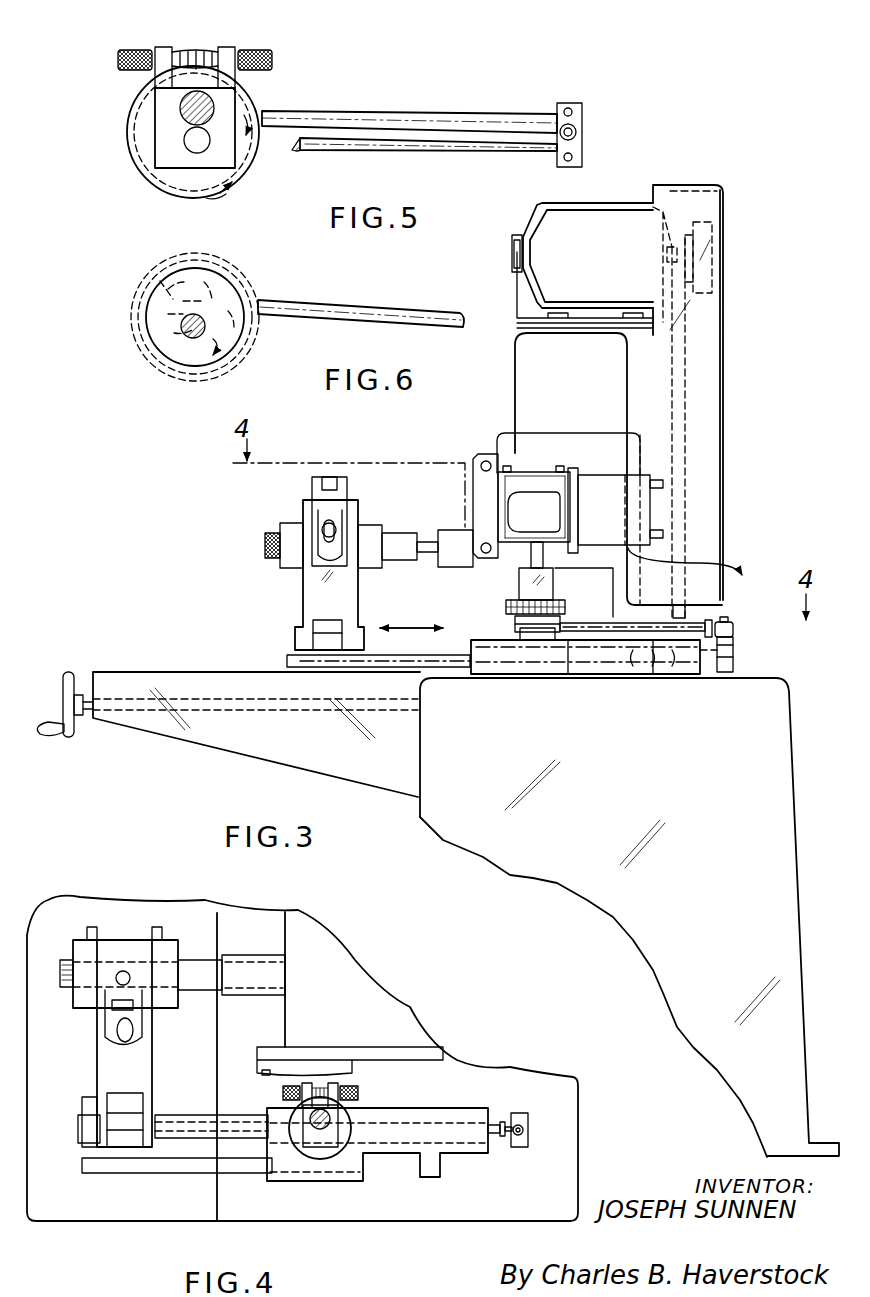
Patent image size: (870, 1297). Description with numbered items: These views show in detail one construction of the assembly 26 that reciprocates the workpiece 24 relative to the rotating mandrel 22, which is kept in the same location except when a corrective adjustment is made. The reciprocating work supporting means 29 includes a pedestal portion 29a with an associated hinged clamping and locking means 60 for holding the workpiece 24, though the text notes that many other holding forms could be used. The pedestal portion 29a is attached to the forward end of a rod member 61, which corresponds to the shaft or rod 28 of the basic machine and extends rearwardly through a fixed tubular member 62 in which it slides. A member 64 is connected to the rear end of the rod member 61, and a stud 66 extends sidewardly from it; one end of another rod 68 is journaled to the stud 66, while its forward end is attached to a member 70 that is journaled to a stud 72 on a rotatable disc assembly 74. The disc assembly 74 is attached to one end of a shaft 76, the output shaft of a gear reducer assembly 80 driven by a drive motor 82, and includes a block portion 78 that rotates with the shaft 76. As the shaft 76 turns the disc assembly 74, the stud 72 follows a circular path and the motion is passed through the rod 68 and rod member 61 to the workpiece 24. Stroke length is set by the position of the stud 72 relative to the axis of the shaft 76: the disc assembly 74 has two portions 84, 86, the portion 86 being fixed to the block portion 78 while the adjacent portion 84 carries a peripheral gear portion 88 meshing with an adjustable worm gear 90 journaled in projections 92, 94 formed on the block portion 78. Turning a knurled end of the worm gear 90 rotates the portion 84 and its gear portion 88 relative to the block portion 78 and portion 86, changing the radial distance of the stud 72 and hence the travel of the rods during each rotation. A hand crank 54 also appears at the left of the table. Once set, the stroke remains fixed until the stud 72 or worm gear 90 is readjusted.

In FIG. 3, the rotating mandrel 22 is at (262, 552).
In FIG. 3, the workpiece 24 is at (372, 535).
In FIG. 4, the workpiece 24 is at (175, 995).
In FIG. 3, the assembly 26 is at (262, 578).
In FIG. 4, the shaft or rod 28 is at (170, 1118).
In FIG. 3, the reciprocating work supporting means 29 is at (300, 607).
In FIG. 4, the reciprocating work supporting means 29 is at (95, 1070).
In FIG. 3, the pedestal portion 29a is at (350, 598).
In FIG. 4, the pedestal portion 29a is at (145, 1065).
In FIG. 3, the hand crank 54 is at (65, 672).
In FIG. 3, the hinged clamping and locking means 60 is at (297, 512).
In FIG. 4, the hinged clamping and locking means 60 is at (165, 935).
In FIG. 5, the rod member 61 is at (338, 148).
In FIG. 3, the rod member 61 is at (716, 674).
In FIG. 3, the fixed tubular member 62 is at (668, 682).
In FIG. 4, the fixed tubular member 62 is at (402, 1153).
In FIG. 3, the member 64 is at (735, 665).
In FIG. 4, the member 64 is at (522, 1147).
In FIG. 3, the stud 66 is at (728, 617).
In FIG. 4, the stud 66 is at (526, 1130).
In FIG. 5, the rod 68 is at (305, 112).
In FIG. 6, the rod 68 is at (334, 300).
In FIG. 3, the rod 68 is at (682, 624).
In FIG. 6, the member 70 is at (143, 322).
In FIG. 3, the member 70 is at (546, 640).
In FIG. 6, the stud 72 is at (148, 284).
In FIG. 3, the stud 72 is at (531, 634).
In FIG. 5, the rotatable disc assembly 74 is at (118, 103).
In FIG. 3, the rotatable disc assembly 74 is at (503, 610).
In FIG. 4, the rotatable disc assembly 74 is at (287, 1103).
In FIG. 5, the shaft 76 is at (215, 103).
In FIG. 6, the shaft 76 is at (190, 337).
In FIG. 3, the shaft 76 is at (580, 550).
In FIG. 4, the shaft 76 is at (330, 1119).
In FIG. 5, the block portion 78 is at (160, 140).
In FIG. 3, the block portion 78 is at (553, 591).
In FIG. 3, the gear reducer assembly 80 is at (525, 462).
In FIG. 3, the drive motor 82 is at (603, 475).
In FIG. 5, the assembly portion 84 is at (228, 203).
In FIG. 3, the assembly portion 84 is at (603, 547).
In FIG. 3, the assembly portion 86 is at (520, 602).
In FIG. 3, the peripheral gear portion 88 is at (558, 622).
In FIG. 5, the adjustable worm gear 90 is at (272, 58).
In FIG. 4, the adjustable worm gear 90 is at (358, 1092).
In FIG. 5, the projection 92 is at (163, 47).
In FIG. 4, the projection 92 is at (308, 1083).
In FIG. 5, the projection 94 is at (228, 47).
In FIG. 4, the projection 94 is at (334, 1083).